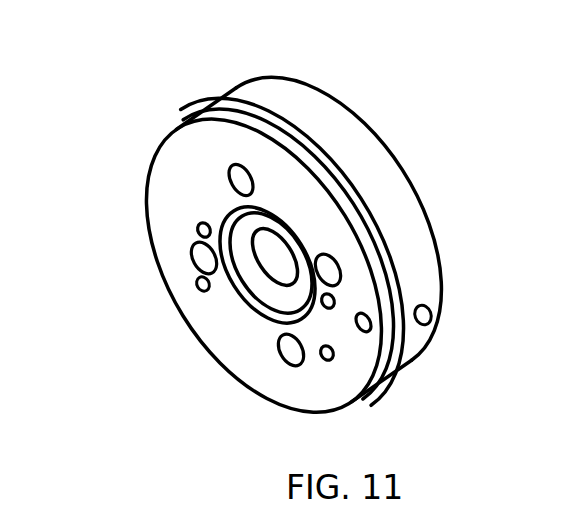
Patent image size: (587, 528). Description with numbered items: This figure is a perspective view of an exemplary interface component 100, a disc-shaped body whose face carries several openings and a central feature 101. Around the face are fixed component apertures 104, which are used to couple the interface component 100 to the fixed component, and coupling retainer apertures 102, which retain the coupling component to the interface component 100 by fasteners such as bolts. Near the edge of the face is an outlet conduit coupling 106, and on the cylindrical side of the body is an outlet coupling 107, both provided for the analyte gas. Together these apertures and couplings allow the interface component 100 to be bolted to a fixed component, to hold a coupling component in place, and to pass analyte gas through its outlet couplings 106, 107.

The interface component 100 is at (169, 122).
The central bore 101 is at (282, 260).
The coupling retainer apertures 102 is at (198, 290).
The fixed component apertures 104 is at (232, 183).
The outlet conduit coupling 106 is at (366, 334).
The outlet coupling 107 is at (432, 313).